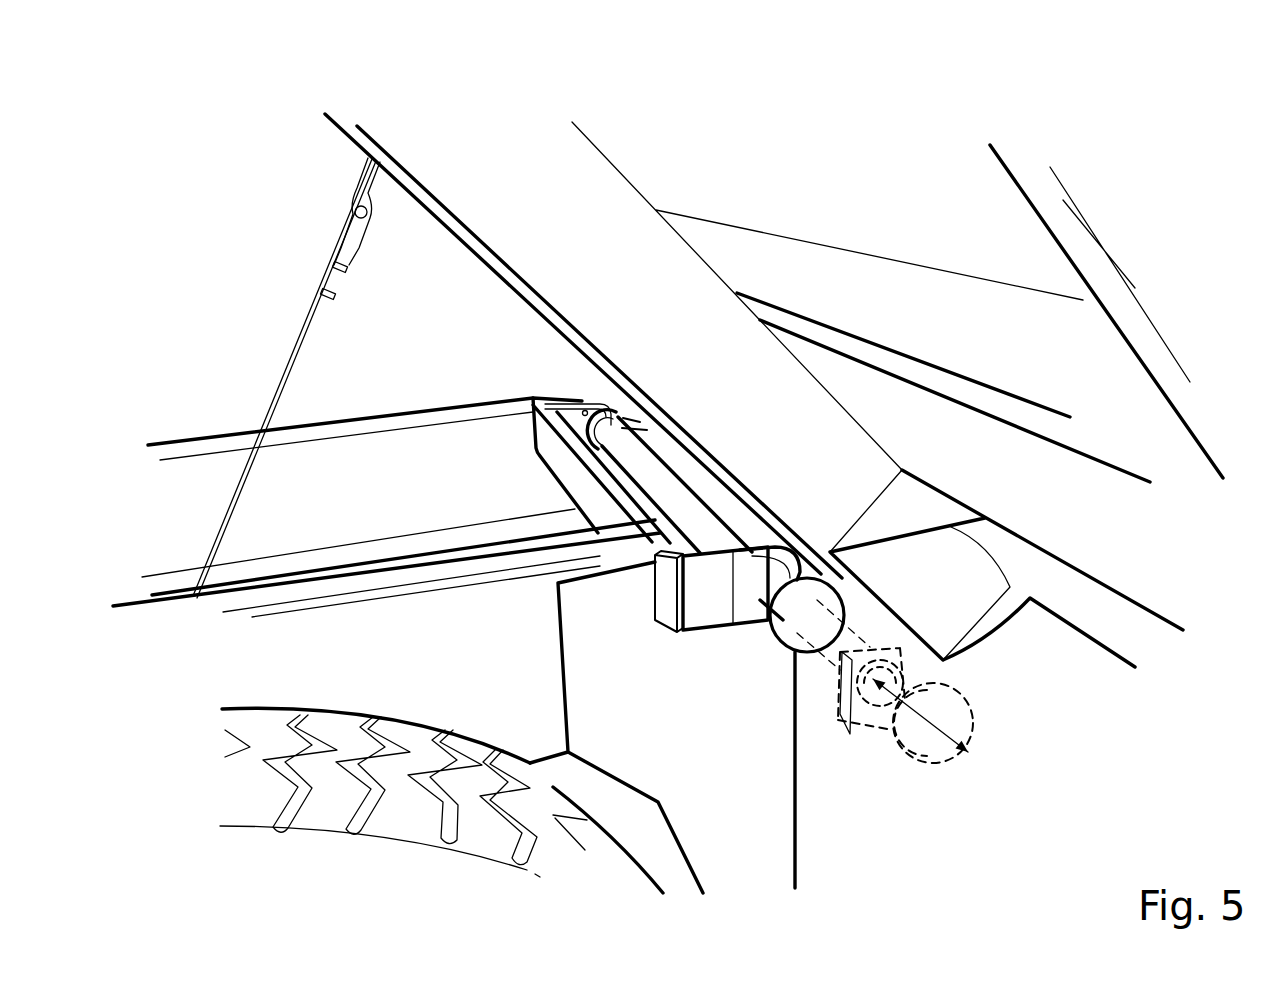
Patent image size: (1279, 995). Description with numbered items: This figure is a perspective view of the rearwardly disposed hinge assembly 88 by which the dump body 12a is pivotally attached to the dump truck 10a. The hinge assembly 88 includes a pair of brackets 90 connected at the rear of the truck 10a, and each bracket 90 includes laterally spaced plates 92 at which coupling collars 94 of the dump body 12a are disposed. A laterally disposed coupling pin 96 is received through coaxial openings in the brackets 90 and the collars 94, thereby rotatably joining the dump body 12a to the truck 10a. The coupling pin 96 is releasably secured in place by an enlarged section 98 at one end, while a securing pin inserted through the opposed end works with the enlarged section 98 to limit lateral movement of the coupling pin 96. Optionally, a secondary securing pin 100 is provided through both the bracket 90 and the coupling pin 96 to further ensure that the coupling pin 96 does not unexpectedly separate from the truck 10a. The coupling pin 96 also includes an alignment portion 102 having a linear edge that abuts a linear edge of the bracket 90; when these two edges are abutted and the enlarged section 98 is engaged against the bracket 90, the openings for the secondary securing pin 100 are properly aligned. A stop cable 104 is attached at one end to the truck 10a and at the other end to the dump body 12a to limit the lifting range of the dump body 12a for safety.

The dump truck 10a is at (230, 266).
The dump body 12a is at (900, 319).
The hinge assembly 88 is at (664, 650).
The bracket 90 is at (520, 378).
The plate 92 is at (580, 402).
The coupling collar 94 is at (652, 560).
The coupling pin 96 is at (637, 463).
The enlarged section 98 is at (748, 612).
The secondary securing pin 100 is at (584, 411).
The alignment portion 102 is at (740, 598).
The stop cable 104 is at (282, 385).